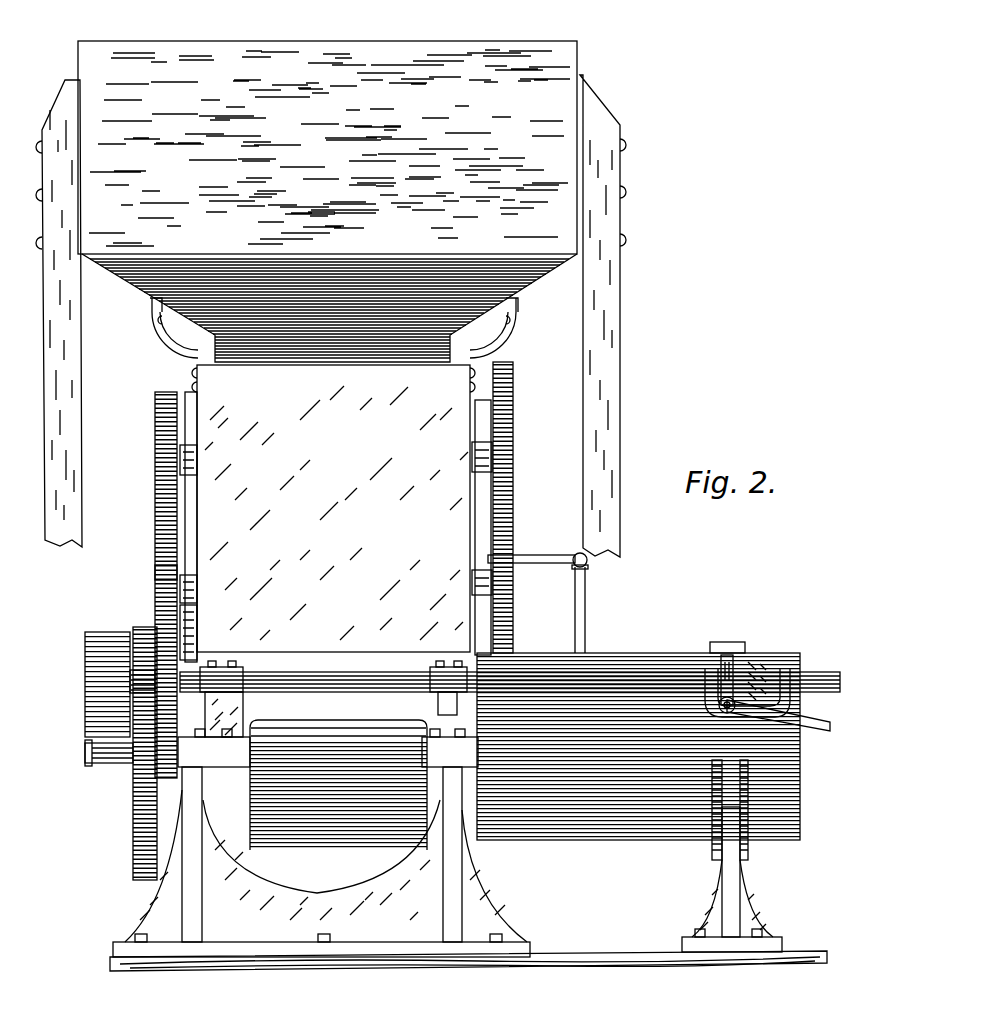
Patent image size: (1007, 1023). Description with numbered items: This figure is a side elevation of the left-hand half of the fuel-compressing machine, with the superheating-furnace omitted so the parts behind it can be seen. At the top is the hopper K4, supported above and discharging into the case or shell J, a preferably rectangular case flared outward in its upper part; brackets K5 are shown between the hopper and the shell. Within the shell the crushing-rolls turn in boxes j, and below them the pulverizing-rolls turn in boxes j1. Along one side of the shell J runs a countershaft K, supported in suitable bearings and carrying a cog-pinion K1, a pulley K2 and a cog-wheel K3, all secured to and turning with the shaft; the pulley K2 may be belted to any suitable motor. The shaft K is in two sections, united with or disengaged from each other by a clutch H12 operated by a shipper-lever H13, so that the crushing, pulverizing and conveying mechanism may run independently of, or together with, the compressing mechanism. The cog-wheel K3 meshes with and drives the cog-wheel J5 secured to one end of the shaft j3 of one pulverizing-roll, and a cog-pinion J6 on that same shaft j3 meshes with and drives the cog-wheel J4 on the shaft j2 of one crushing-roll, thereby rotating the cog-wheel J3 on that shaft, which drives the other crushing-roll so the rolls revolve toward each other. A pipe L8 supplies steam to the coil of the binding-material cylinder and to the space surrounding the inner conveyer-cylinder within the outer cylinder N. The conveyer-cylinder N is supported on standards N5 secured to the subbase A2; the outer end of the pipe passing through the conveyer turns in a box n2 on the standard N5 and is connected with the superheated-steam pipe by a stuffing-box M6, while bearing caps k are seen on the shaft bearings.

The hopper K4 is at (342, 188).
The hopper bracket K5 is at (478, 336).
The case or shell J is at (333, 508).
The cog-wheel J3 is at (156, 431).
The shaft j2 is at (155, 455).
The cog-wheel J5 is at (157, 573).
The shaft j3 is at (156, 592).
The cog-wheel K3 is at (200, 640).
The boxes j is at (488, 470).
The cog-wheel J4 is at (502, 455).
The cog-pinion J6 is at (486, 590).
The boxes j1 is at (540, 564).
The pipe L8 is at (588, 616).
The pulley K2 is at (106, 684).
The cog-pinion K1 is at (140, 683).
The stuffing-box M6 is at (125, 766).
The countershaft K is at (316, 667).
The bearing cap k is at (240, 668).
The box n2 is at (193, 724).
The cylinder N is at (525, 751).
The clutch H12 is at (757, 647).
The shipper-lever H13 is at (818, 727).
The standards N5 is at (228, 857).
The subbase A2 is at (585, 953).